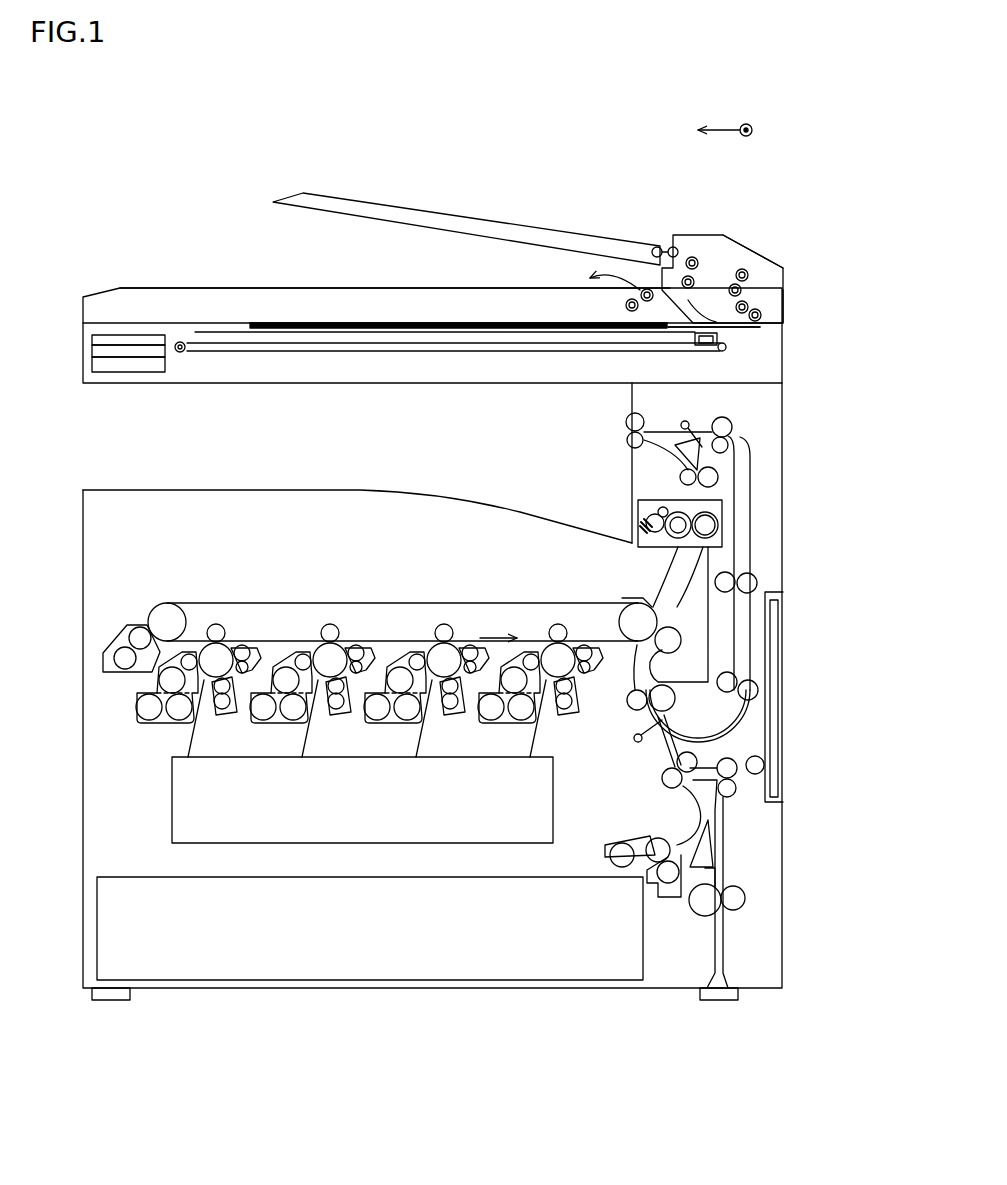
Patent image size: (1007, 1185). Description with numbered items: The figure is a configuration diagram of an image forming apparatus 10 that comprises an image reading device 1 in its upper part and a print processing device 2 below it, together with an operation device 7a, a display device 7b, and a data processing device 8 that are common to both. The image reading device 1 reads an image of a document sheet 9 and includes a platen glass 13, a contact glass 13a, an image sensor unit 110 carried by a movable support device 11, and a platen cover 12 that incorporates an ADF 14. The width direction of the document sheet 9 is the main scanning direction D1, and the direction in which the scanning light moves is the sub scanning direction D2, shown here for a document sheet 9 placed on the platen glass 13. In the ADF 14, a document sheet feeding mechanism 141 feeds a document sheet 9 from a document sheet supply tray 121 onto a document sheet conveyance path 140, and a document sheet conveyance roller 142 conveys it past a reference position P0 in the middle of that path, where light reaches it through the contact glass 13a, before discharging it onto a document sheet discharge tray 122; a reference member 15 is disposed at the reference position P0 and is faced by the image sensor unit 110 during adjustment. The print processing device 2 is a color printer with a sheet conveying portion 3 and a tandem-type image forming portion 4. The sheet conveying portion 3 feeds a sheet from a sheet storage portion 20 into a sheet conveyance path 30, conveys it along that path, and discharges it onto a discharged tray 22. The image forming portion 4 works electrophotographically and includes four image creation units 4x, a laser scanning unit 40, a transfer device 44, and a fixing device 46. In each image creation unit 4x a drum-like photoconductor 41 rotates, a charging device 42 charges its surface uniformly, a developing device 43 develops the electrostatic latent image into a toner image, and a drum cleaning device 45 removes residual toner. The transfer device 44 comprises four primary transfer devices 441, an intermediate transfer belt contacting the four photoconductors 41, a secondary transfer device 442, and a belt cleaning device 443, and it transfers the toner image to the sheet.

The image forming apparatus 10 is at (123, 183).
The image reading device 1 is at (848, 296).
The print processing device 2 is at (101, 486).
The sheet conveying portion 3 is at (746, 874).
The image forming portion 4 is at (96, 585).
The image creation unit 4x is at (202, 633).
The operation device 7a is at (94, 337).
The display device 7b is at (92, 350).
The data processing device 8 is at (92, 368).
The document sheet 9 is at (410, 323).
The movable support device 11 is at (731, 343).
The platen cover 12 is at (700, 261).
The platen glass 13 is at (540, 333).
The contact glass 13a is at (785, 307).
The ADF (automatic document sheet conveying device) 14 is at (776, 287).
The reference member 15 is at (708, 321).
The sheet storage portion 20 is at (97, 952).
The discharged tray 22 is at (422, 491).
The sheet conveyance path 30 is at (665, 783).
The laser scanning unit 40 is at (559, 805).
The photoconductor 41 is at (233, 678).
The charging device 42 is at (225, 714).
The developing device 43 is at (160, 724).
The transfer device 44 is at (142, 617).
The drum cleaning device 45 is at (260, 652).
The fixing device 46 is at (722, 507).
The image sensor unit 110 is at (710, 347).
The document sheet supply tray 121 is at (273, 202).
The document sheet discharge tray 122 is at (463, 288).
The document sheet conveyance path 140 is at (750, 287).
The document sheet feeding mechanism 141 is at (665, 248).
The document sheet conveyance roller 142 is at (692, 257).
The primary transfer device 441 is at (220, 625).
The secondary transfer device 442 is at (682, 638).
The belt cleaning device 443 is at (103, 668).
The reference position P0 is at (703, 322).
The main scanning direction D1 is at (758, 117).
The sub scanning direction D2 is at (703, 130).